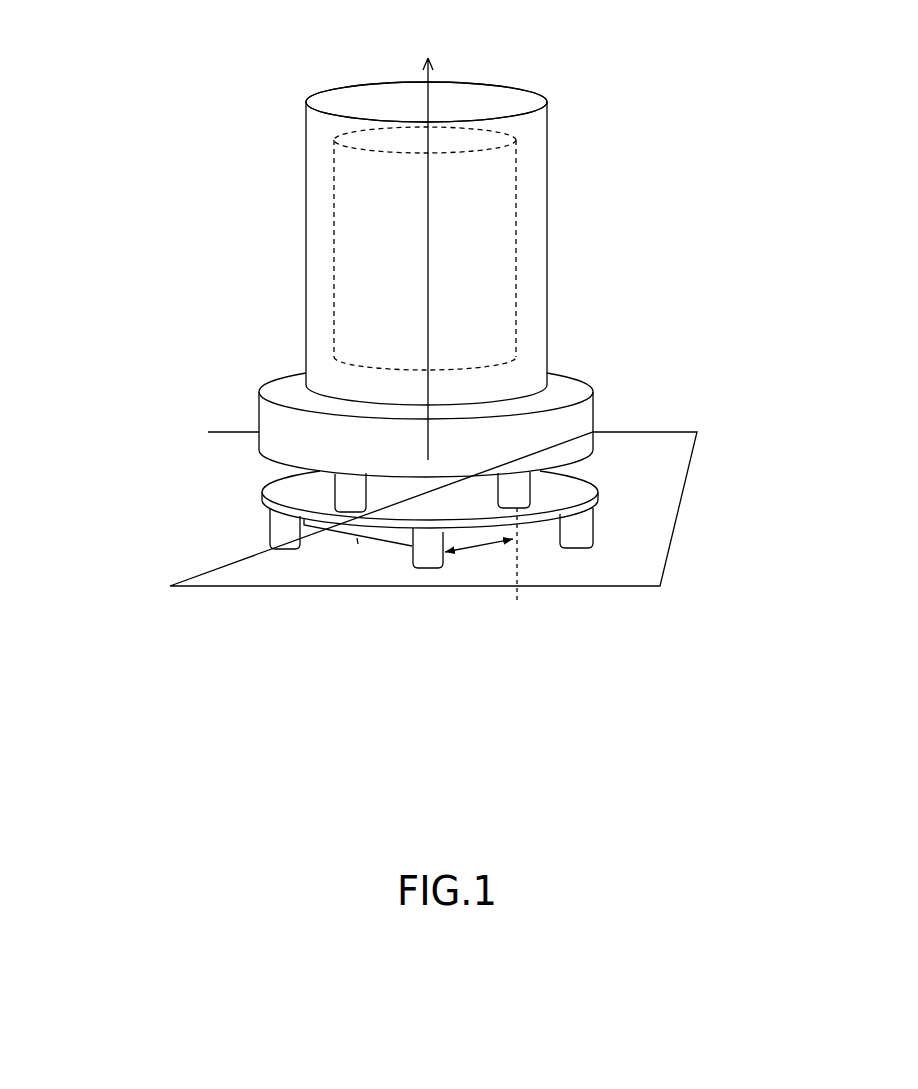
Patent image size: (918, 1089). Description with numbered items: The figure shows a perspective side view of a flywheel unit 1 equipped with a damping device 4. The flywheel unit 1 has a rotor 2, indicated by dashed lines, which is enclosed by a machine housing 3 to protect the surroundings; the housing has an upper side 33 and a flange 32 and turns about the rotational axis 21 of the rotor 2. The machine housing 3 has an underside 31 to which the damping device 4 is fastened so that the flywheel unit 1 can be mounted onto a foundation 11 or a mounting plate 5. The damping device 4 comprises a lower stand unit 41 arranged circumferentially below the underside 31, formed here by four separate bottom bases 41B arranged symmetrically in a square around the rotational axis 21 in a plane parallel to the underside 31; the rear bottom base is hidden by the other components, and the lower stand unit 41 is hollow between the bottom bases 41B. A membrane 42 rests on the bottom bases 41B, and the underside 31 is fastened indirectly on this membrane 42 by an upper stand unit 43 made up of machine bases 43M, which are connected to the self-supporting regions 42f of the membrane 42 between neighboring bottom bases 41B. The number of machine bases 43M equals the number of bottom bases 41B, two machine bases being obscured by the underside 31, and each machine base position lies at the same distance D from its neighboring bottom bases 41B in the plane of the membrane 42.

The flywheel unit 1 is at (436, 366).
The rotor 2 is at (340, 218).
The rotational axis of rotor 21 is at (430, 246).
The machine housing 3 is at (470, 222).
The underside of the machine housing 31 is at (412, 490).
The flange 32 is at (277, 418).
The upper side of machine housing 33 is at (484, 107).
The damping device 4 is at (436, 576).
The lower stand unit 41 is at (469, 595).
The bottom base 41B is at (285, 553).
The membrane 42 is at (448, 508).
The self-supporting connection 42f is at (346, 553).
The upper stand unit 43 is at (393, 557).
The machine base 43M is at (352, 493).
The mounting plate 5 is at (369, 517).
The foundation 11 is at (197, 562).
The distance of the machine base position to neighboring bottom bases D is at (481, 548).